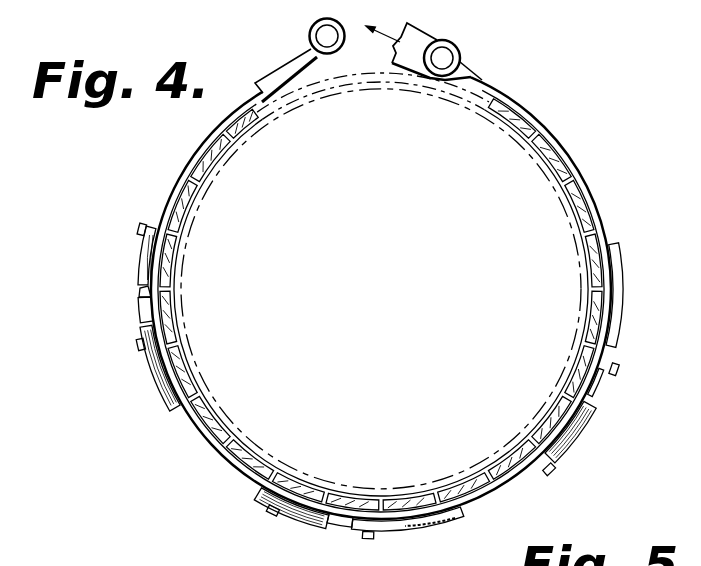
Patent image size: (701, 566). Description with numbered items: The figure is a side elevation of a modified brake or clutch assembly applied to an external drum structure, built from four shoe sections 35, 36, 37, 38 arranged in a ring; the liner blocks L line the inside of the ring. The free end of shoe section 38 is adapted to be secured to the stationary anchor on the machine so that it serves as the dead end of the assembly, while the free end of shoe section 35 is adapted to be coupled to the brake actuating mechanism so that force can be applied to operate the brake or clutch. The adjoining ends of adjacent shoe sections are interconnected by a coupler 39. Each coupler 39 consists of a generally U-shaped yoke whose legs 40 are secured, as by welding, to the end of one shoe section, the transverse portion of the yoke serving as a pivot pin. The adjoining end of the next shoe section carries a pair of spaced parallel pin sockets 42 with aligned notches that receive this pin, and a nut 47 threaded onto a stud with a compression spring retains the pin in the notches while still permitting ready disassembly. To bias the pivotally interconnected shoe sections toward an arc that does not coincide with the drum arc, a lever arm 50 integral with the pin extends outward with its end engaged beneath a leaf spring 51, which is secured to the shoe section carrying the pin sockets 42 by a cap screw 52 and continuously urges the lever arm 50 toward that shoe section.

The shoe section 35 is at (600, 212).
The shoe section 36 is at (502, 488).
The shoe section 37 is at (230, 468).
The shoe section 38 is at (192, 161).
The coupler 39 is at (138, 361).
The legs 40 is at (165, 404).
The pin sockets 42 is at (140, 316).
The nut 47 is at (136, 341).
The lever arm 50 is at (140, 292).
The leaf spring 51 is at (140, 255).
The cap screw 52 is at (139, 230).
The liner segments L is at (192, 207).